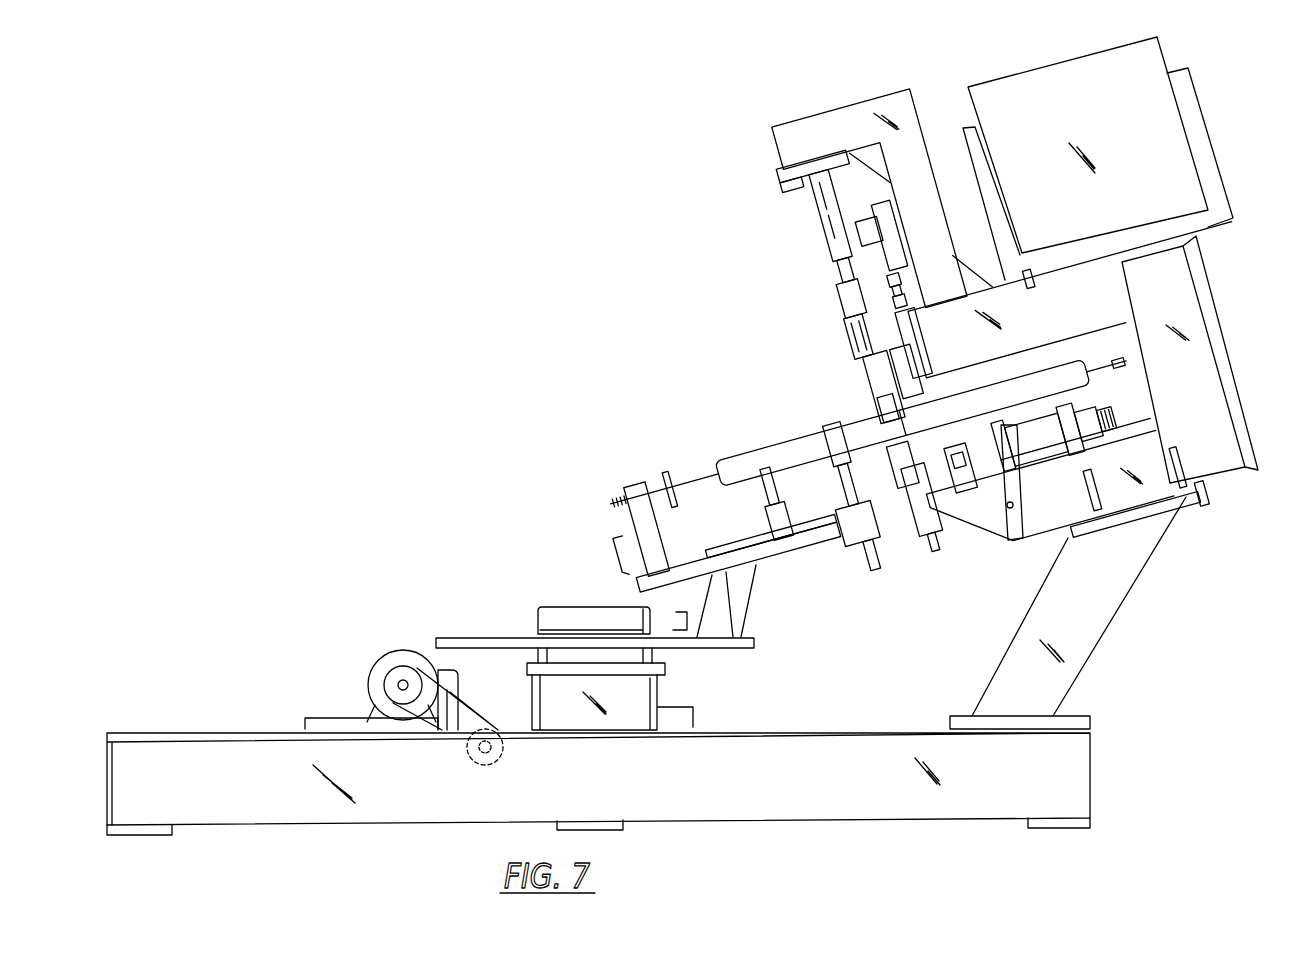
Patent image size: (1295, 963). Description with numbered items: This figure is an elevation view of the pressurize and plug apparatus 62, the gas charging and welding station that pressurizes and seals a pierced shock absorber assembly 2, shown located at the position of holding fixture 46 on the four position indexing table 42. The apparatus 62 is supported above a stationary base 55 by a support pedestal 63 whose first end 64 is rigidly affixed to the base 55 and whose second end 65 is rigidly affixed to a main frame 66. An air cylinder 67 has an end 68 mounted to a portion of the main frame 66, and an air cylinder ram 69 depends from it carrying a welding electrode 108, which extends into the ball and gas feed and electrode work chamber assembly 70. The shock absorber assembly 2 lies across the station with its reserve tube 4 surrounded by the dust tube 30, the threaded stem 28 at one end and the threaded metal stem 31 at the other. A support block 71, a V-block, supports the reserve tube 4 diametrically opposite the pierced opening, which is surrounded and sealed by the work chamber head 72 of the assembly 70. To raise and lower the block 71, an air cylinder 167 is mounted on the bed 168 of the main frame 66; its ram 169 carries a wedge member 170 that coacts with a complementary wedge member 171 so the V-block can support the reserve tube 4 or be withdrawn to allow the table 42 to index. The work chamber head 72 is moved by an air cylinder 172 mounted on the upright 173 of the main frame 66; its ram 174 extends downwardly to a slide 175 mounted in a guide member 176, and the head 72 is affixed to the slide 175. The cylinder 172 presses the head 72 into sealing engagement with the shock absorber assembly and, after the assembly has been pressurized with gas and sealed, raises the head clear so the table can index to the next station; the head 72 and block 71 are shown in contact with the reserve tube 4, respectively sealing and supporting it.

The shock absorber assembly 2 is at (781, 428).
The reserve tube 4 is at (757, 452).
The threaded stem 28 is at (1100, 368).
The dust tube 30 is at (1043, 374).
The threaded metal stem 31 is at (658, 486).
The indexing table 42 is at (466, 636).
The holding fixture 46 is at (828, 542).
The stationary base 55 is at (1083, 777).
The pressurize and plug apparatus 62 is at (802, 236).
The support pedestal 63 is at (1130, 601).
The first end 64 is at (1055, 718).
The second end 65 is at (1180, 498).
The main frame 66 is at (1208, 350).
The air cylinder 67 is at (822, 203).
The end 68 is at (812, 175).
The air cylinder ram 69 is at (836, 274).
The ball and gas feed and electrode work chamber assembly 70 is at (852, 381).
The support block 71 is at (888, 459).
The work chamber head 72 is at (881, 408).
The welding electrode 108 is at (860, 364).
The air cylinder 167 is at (1060, 418).
The bed 168 is at (1052, 515).
The ram 169 is at (968, 472).
The wedge member 170 is at (950, 475).
The complementary wedge member 171 is at (900, 476).
The air cylinder 172 is at (884, 230).
The upright 173 is at (907, 163).
The ram 174 is at (902, 268).
The slide 175 is at (924, 383).
The guide member 176 is at (918, 354).